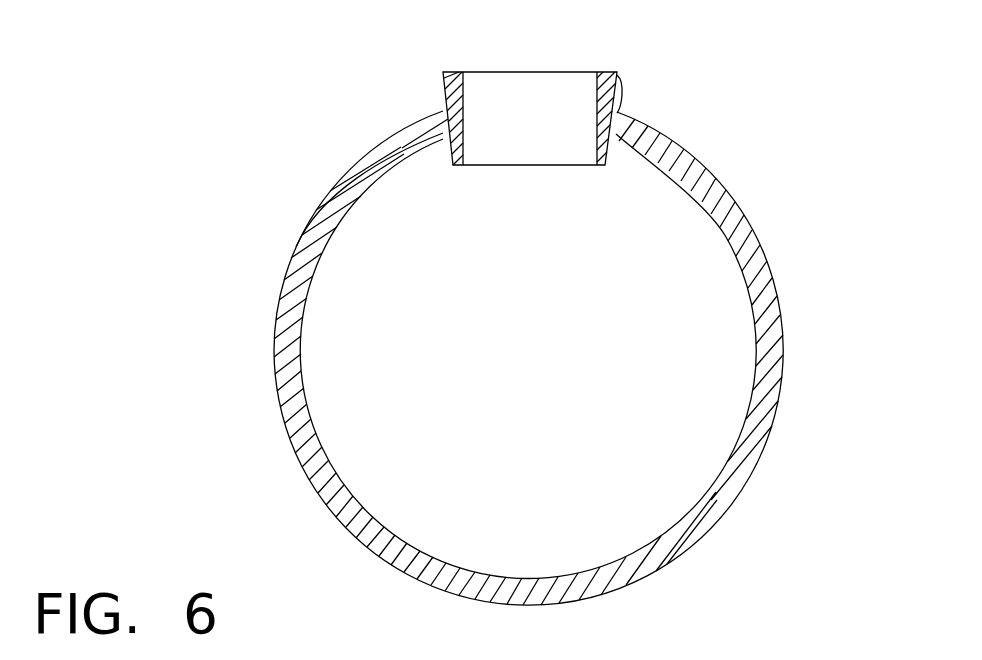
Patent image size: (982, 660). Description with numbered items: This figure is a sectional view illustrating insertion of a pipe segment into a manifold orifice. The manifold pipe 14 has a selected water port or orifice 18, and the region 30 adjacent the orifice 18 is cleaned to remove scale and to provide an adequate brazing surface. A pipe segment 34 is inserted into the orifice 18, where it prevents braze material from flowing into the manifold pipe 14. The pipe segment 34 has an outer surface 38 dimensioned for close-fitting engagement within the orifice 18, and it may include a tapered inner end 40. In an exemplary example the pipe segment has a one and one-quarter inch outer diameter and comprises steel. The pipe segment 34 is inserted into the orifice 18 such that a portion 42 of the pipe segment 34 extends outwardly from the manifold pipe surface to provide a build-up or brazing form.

The manifold pipe 14 is at (775, 365).
The orifice 18 is at (443, 139).
The region 30 is at (668, 142).
The pipe segment 34 is at (606, 78).
The outer surface 38 is at (438, 121).
The tapered inner end 40 is at (458, 148).
The portion 42 is at (621, 94).